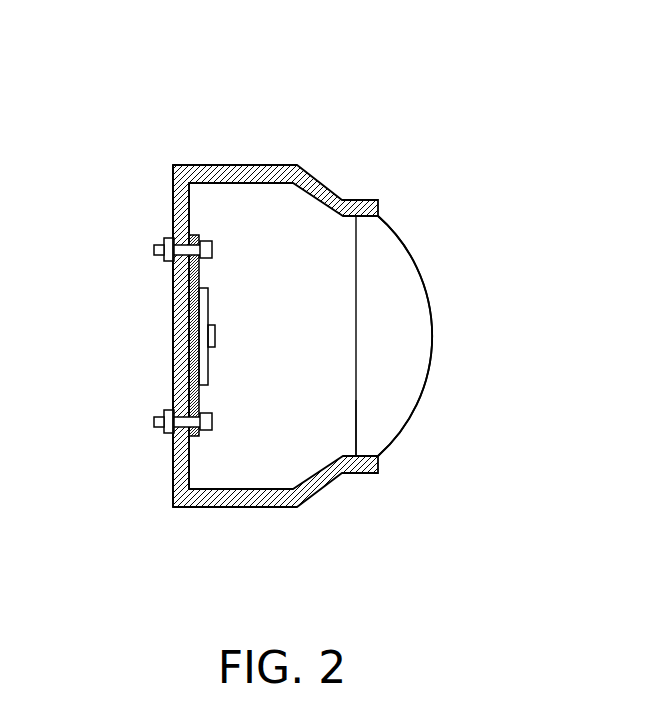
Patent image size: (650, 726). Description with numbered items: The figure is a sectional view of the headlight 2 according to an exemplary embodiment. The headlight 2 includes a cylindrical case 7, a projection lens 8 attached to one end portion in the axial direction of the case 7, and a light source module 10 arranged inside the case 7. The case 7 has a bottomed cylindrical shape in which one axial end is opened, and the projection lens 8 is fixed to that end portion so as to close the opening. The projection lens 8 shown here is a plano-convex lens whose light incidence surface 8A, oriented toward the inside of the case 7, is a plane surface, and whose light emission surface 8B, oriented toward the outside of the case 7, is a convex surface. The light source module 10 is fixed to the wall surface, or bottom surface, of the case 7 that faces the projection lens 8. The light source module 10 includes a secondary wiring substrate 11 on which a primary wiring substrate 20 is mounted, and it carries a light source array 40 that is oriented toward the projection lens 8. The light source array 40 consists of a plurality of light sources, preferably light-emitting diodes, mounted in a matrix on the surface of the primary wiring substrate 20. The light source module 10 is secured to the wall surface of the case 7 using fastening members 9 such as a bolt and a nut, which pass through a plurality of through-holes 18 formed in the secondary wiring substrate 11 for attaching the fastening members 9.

The headlight 2 is at (397, 138).
The case 7 is at (186, 337).
The projection lens 8 is at (397, 257).
The light incidence surface 8A is at (353, 407).
The light emission surface 8B is at (432, 352).
The fastening member 9 is at (167, 237).
The light source module 10 is at (205, 435).
The secondary wiring substrate 11 is at (191, 233).
The through-hole 18 is at (172, 395).
The primary wiring substrate 20 is at (207, 298).
The light source array 40 is at (216, 337).